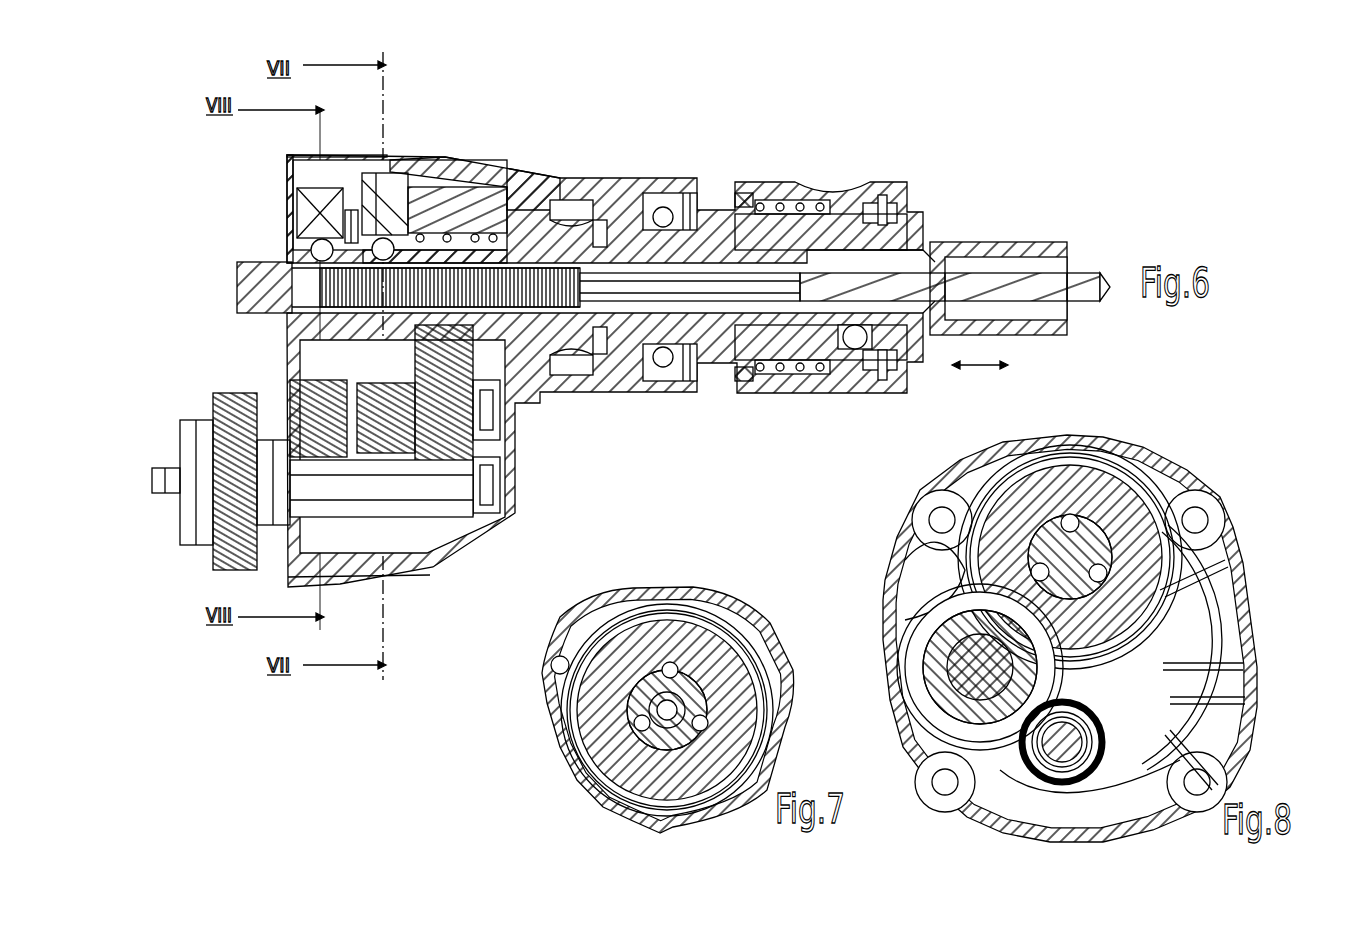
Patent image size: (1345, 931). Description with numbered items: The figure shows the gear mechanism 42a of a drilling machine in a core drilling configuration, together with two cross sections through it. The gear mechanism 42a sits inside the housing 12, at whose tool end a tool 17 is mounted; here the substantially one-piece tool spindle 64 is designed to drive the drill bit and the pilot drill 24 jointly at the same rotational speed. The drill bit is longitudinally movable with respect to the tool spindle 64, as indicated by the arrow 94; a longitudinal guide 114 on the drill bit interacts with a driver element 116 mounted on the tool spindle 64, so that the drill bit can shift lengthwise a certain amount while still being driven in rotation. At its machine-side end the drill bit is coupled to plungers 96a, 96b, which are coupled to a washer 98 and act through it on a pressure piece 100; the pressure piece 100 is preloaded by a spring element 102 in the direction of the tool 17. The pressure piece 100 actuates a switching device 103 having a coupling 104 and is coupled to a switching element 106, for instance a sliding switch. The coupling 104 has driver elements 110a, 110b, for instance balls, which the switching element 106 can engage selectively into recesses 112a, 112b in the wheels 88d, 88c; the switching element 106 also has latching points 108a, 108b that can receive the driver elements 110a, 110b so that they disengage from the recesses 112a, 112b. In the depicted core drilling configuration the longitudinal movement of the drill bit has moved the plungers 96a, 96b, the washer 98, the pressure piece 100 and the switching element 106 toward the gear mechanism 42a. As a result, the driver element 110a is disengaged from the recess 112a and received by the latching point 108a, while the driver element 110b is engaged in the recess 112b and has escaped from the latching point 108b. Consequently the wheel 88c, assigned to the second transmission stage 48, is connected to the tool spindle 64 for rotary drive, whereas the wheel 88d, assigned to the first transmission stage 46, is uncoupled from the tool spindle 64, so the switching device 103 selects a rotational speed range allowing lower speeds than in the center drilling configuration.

In FIG. 6, the housing 12 is at (716, 347).
In FIG. 8, the housing 12 is at (1248, 700).
In FIG. 6, the tool 17 is at (955, 185).
In FIG. 6, the pilot drill 24 is at (1077, 270).
In FIG. 6, the gear mechanism 42a is at (299, 447).
In FIG. 6, the first transmission stage 46 is at (302, 180).
In FIG. 6, the second transmission stage 48 is at (377, 222).
In FIG. 6, the tool spindle 64 is at (232, 283).
In FIG. 7, the tool spindle 64 is at (636, 665).
In FIG. 8, the tool spindle 64 is at (1128, 543).
In FIG. 6, the wheel 88c is at (396, 165).
In FIG. 7, the wheel 88c is at (735, 662).
In FIG. 6, the wheel 88d is at (298, 225).
In FIG. 8, the wheel 88d is at (960, 550).
In FIG. 6, the arrow 94 is at (1027, 357).
In FIG. 6, the plunger 96a is at (712, 260).
In FIG. 6, the plunger 96b is at (725, 322).
In FIG. 6, the washer 98 is at (628, 247).
In FIG. 6, the pressure piece 100 is at (555, 212).
In FIG. 6, the spring element 102 is at (480, 240).
In FIG. 6, the switching device 103 is at (262, 157).
In FIG. 6, the coupling 104 is at (347, 240).
In FIG. 6, the switching element 106 is at (460, 225).
In FIG. 8, the latching point 108a is at (955, 490).
In FIG. 7, the latching point 108b is at (615, 697).
In FIG. 6, the driver element 110a is at (308, 250).
In FIG. 8, the driver element 110a is at (1165, 518).
In FIG. 6, the driver element 110b is at (428, 248).
In FIG. 7, the driver element 110b is at (700, 650).
In FIG. 8, the recess 112a is at (1042, 455).
In FIG. 7, the recess 112b is at (667, 662).
In FIG. 6, the longitudinal guide 114 is at (920, 243).
In FIG. 6, the driver element 116 is at (855, 350).